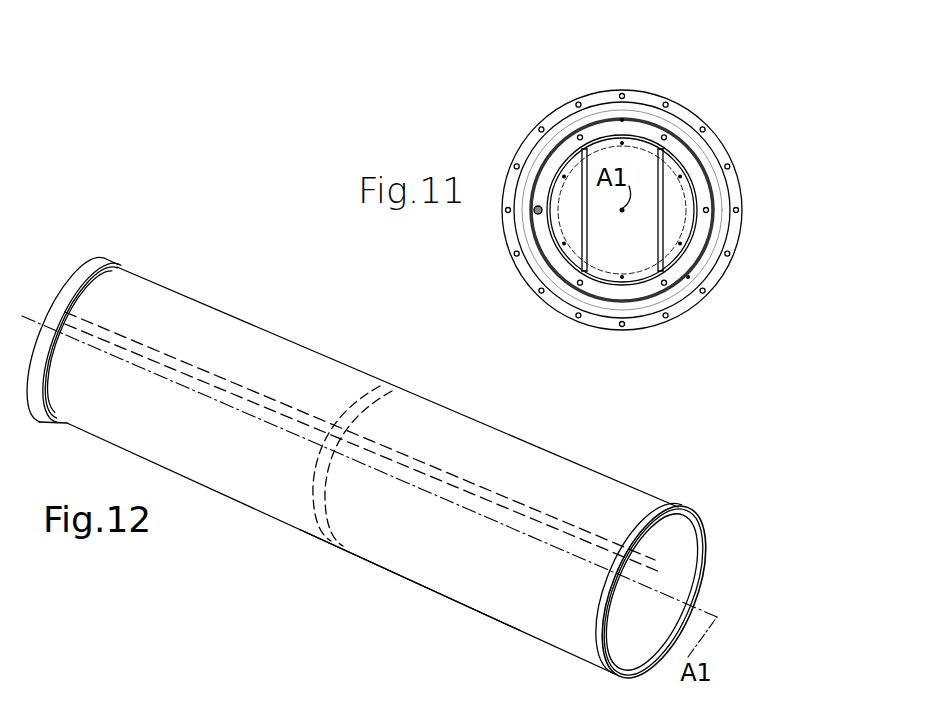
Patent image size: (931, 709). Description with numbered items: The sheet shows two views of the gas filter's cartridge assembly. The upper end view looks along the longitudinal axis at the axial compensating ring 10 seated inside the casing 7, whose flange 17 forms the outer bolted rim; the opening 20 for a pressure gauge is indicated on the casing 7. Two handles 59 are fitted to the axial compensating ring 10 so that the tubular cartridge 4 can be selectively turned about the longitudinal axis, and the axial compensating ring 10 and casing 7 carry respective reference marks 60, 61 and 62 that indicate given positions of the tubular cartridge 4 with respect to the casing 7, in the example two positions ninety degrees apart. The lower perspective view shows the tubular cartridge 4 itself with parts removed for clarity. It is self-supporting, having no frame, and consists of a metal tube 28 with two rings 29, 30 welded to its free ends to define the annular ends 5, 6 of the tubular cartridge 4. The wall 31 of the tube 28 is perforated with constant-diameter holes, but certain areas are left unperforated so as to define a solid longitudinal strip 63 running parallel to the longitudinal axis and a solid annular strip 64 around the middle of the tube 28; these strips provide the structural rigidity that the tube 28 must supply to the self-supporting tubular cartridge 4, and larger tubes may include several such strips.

In FIG. 12, the tubular cartridge 4 is at (404, 598).
In FIG. 12, the annular end 5 is at (126, 267).
In FIG. 12, the annular end 6 is at (710, 513).
In FIG. 11, the casing 7 is at (722, 198).
In FIG. 11, the axial compensating ring 10 is at (607, 130).
In FIG. 11, the flange 17 is at (736, 145).
In FIG. 11, the opening 20 is at (689, 278).
In FIG. 12, the metal tube 28 is at (364, 571).
In FIG. 12, the ring 29 is at (100, 263).
In FIG. 12, the ring 30 is at (680, 506).
In FIG. 12, the wall 31 is at (462, 589).
In FIG. 11, the handles 59 is at (590, 242).
In FIG. 11, the reference mark 60 is at (538, 200).
In FIG. 11, the reference mark 61 is at (529, 213).
In FIG. 11, the reference mark 62 is at (628, 113).
In FIG. 12, the solid longitudinal strip 63 is at (570, 523).
In FIG. 12, the solid annular strip 64 is at (313, 512).